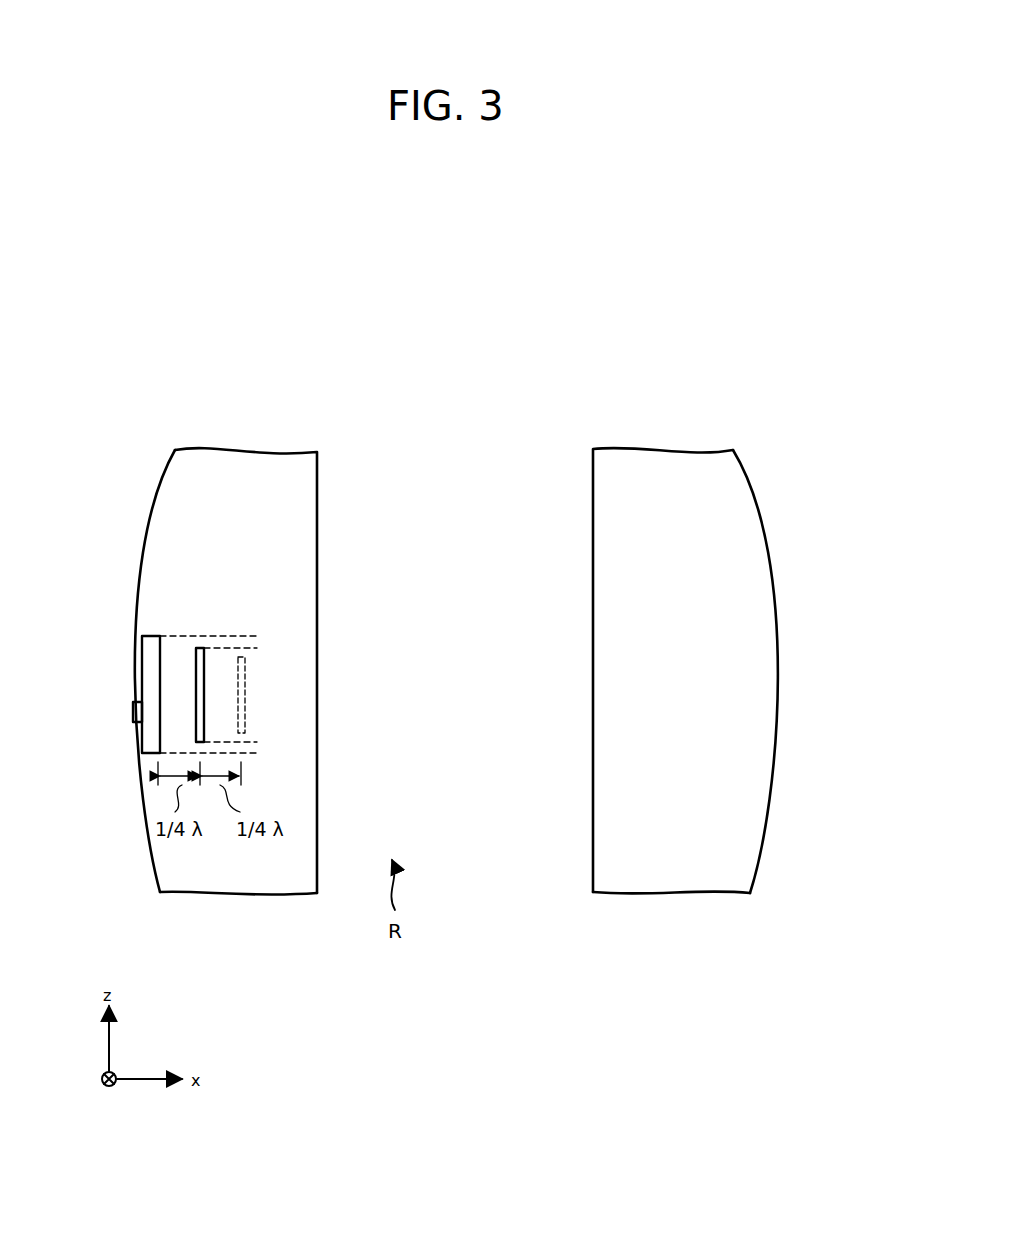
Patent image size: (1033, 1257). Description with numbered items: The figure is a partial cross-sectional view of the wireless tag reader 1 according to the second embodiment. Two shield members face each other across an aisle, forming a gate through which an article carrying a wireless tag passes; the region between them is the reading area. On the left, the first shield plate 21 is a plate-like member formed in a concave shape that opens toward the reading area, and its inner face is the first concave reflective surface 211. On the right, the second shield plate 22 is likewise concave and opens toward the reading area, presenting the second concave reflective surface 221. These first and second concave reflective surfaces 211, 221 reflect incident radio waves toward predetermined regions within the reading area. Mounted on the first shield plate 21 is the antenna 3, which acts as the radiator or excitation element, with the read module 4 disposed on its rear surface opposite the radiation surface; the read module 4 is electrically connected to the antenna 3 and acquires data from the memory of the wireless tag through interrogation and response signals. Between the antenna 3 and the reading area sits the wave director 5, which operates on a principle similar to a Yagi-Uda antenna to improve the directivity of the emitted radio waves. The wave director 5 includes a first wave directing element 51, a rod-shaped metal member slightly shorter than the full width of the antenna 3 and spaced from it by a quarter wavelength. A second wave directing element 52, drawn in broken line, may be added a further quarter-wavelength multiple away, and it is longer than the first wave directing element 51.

The wireless tag reader 1 is at (753, 426).
The first shield plate 21 is at (205, 706).
The first concave reflective surface 211 is at (237, 878).
The second shield plate 22 is at (707, 706).
The second concave reflective surface 221 is at (675, 878).
The antenna 3 is at (148, 655).
The read module 4 is at (136, 712).
The wave director 5 is at (302, 695).
The first wave directing element 51 is at (200, 668).
The second wave directing element 52 is at (242, 708).